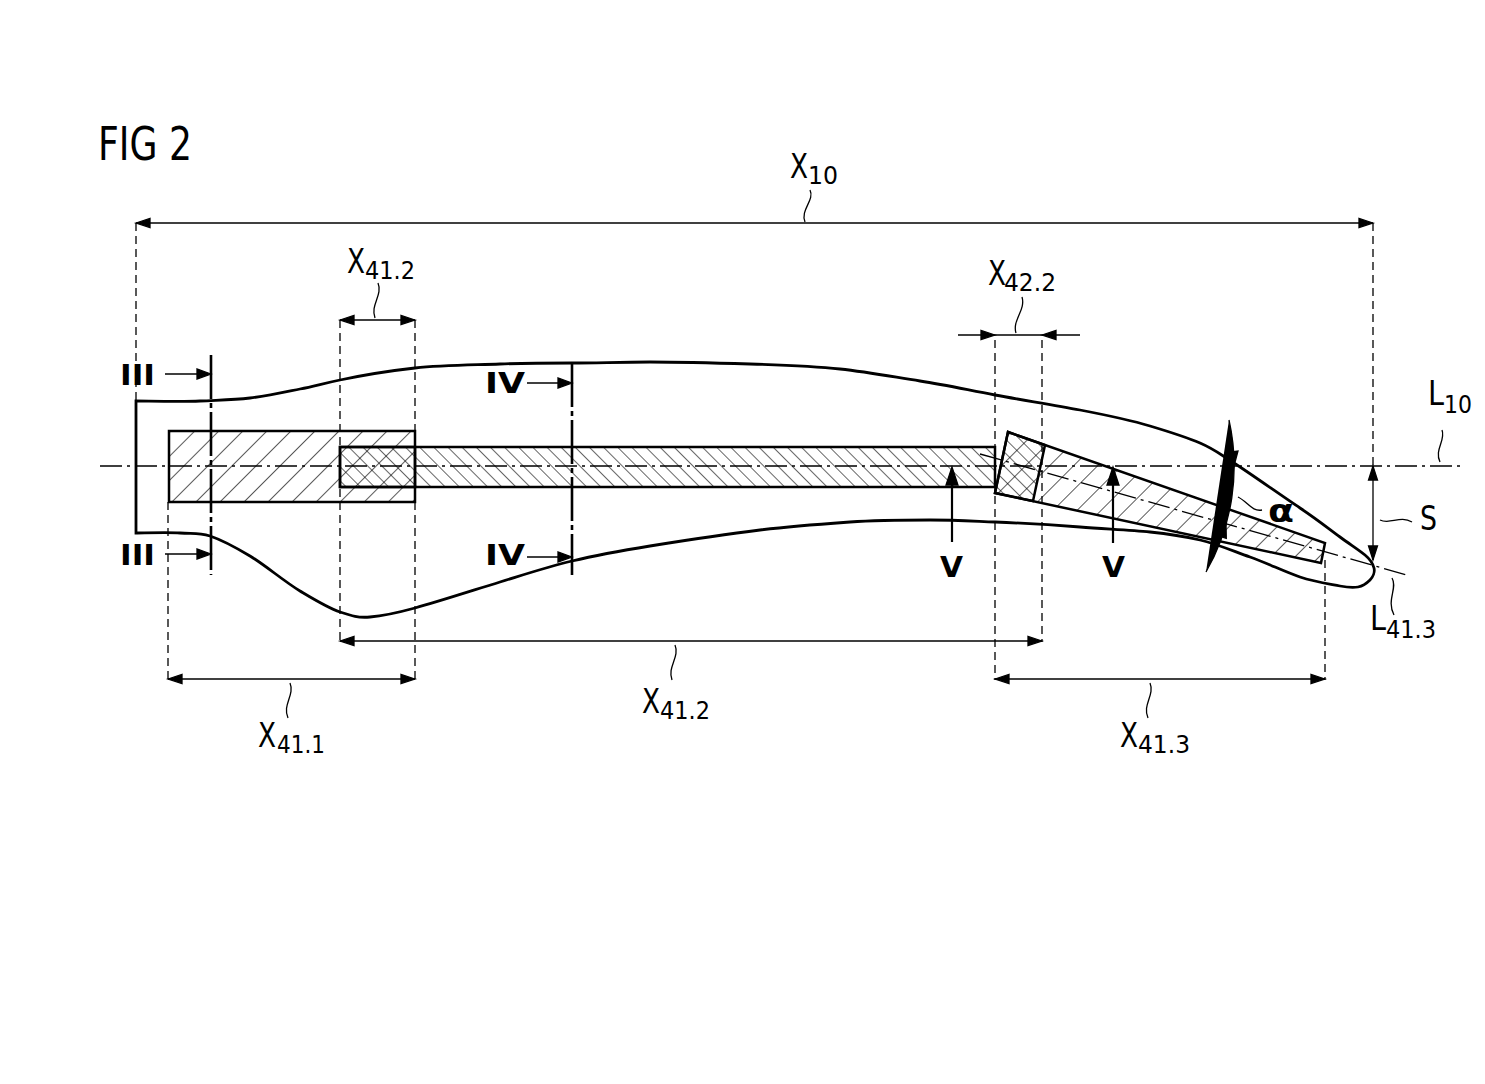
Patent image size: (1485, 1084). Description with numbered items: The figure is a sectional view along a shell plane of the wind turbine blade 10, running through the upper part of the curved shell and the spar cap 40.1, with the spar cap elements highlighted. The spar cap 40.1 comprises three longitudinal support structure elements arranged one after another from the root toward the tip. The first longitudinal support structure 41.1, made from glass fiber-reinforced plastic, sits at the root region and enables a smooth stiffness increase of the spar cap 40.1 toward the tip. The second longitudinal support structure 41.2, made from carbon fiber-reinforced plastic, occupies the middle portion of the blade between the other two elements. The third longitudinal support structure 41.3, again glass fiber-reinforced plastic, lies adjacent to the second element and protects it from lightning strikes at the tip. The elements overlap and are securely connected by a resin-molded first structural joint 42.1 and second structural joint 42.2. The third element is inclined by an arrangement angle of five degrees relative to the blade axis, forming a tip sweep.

The wind turbine blade 10 is at (748, 355).
The spar cap 40.1 is at (745, 438).
The first longitudinal support structure 41.1 is at (285, 443).
The second longitudinal support structure 41.2 is at (665, 452).
The third longitudinal support structure 41.3 is at (1165, 487).
The first structural joint 42.1 is at (383, 447).
The second structural joint 42.2 is at (1016, 440).